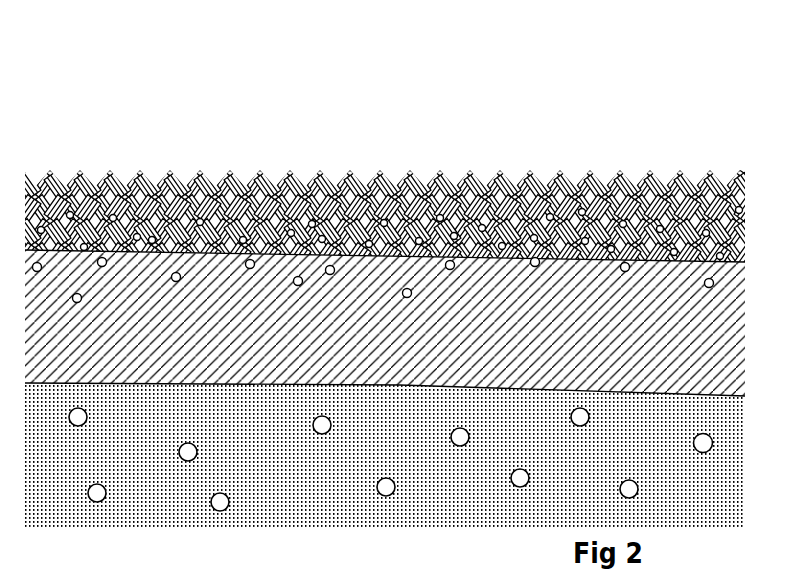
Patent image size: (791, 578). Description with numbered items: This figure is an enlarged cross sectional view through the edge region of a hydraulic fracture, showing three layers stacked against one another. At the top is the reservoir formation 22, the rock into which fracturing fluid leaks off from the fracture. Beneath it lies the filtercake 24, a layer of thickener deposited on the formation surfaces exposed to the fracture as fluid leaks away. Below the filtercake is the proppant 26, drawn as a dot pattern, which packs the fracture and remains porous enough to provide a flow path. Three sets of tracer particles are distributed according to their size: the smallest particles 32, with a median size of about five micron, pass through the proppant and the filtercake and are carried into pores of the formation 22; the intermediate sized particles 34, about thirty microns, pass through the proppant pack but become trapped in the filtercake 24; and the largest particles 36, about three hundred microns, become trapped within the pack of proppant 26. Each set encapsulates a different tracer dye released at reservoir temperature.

The reservoir formation 22 is at (633, 200).
The filtercake 24 is at (348, 336).
The proppant 26 is at (278, 450).
The smallest particles 32 is at (438, 214).
The intermediate sized particles 34 is at (77, 293).
The largest particles 36 is at (76, 408).